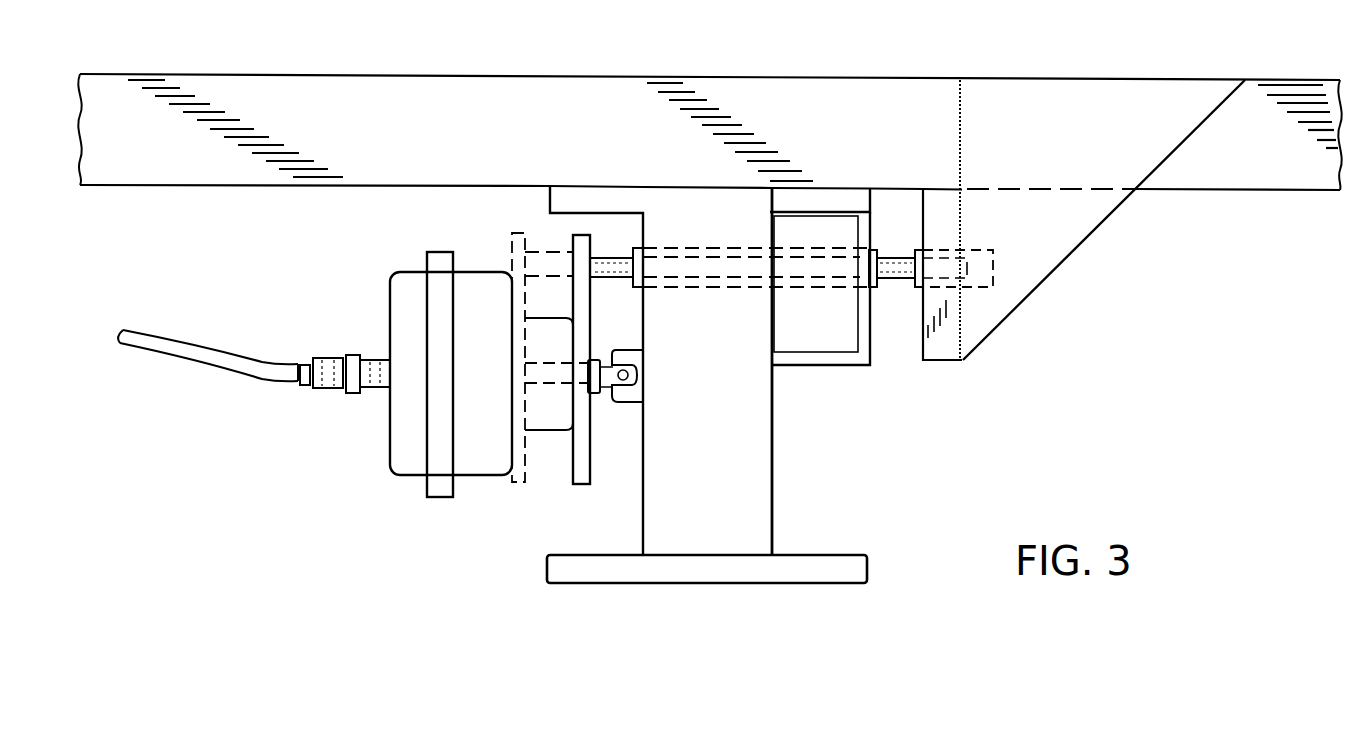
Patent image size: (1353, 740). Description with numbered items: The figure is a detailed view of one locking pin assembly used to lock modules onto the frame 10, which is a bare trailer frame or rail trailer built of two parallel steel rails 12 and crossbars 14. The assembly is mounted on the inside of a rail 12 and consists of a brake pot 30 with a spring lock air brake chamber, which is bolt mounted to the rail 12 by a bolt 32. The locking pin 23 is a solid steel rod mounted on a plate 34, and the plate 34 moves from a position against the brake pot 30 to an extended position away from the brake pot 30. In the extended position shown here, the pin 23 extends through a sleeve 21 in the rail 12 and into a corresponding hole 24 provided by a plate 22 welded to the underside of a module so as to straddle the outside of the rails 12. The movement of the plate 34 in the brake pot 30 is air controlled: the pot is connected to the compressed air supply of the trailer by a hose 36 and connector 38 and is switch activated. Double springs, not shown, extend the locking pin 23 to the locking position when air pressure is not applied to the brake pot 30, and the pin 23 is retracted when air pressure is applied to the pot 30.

The frame 10 is at (849, 460).
The rail 12 is at (740, 505).
The crossbar 14 is at (556, 96).
The sleeve 21 is at (723, 285).
The plate 22 is at (938, 206).
The locking pin 23 is at (611, 255).
The hole 24 is at (981, 276).
The brake pot 30 is at (392, 469).
The bolt 32 is at (628, 397).
The plate 34 is at (573, 472).
The hose 36 is at (212, 364).
The connector 38 is at (328, 357).